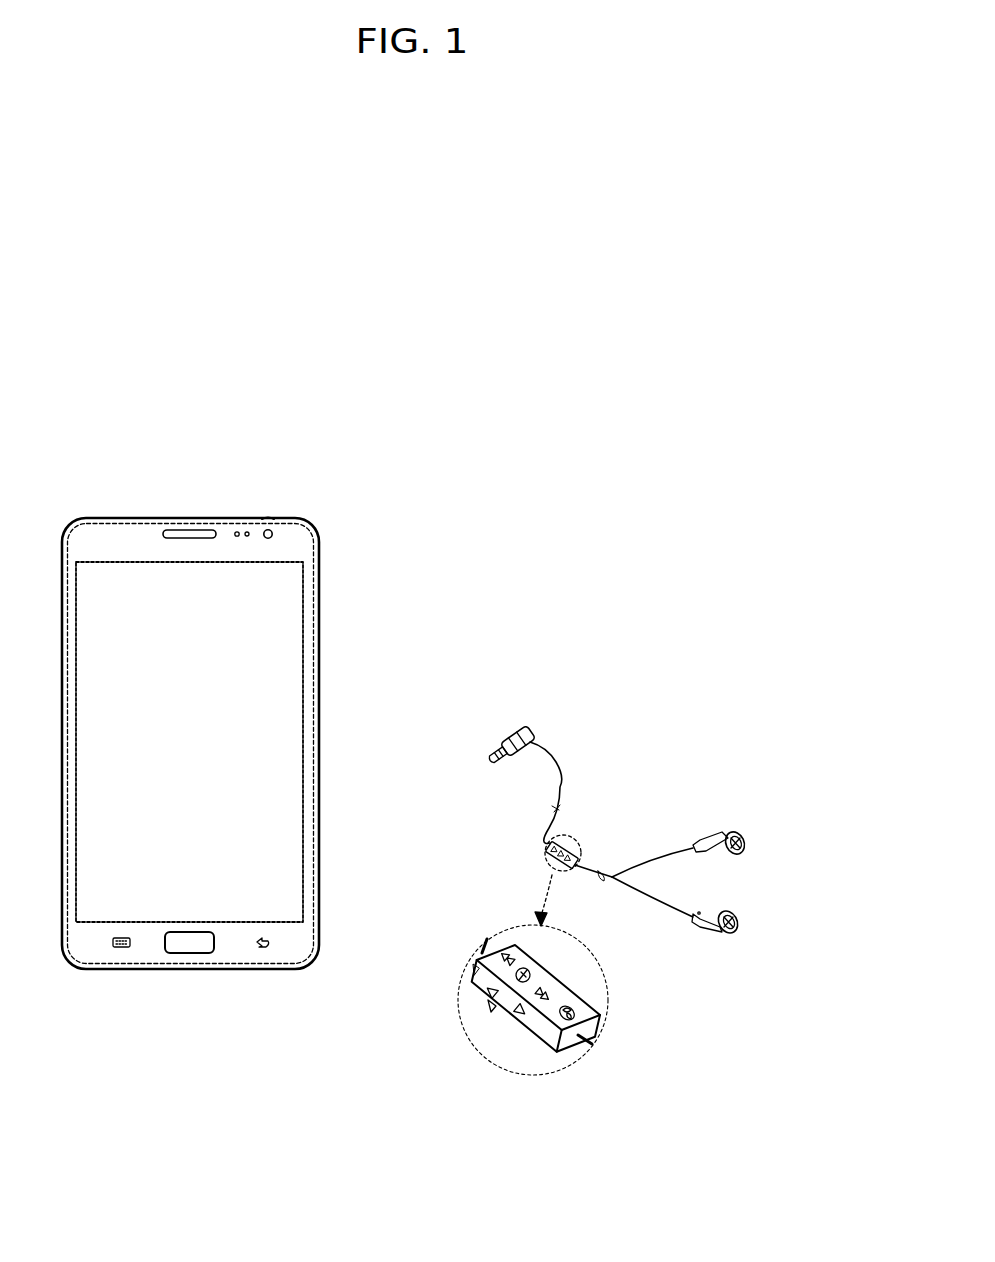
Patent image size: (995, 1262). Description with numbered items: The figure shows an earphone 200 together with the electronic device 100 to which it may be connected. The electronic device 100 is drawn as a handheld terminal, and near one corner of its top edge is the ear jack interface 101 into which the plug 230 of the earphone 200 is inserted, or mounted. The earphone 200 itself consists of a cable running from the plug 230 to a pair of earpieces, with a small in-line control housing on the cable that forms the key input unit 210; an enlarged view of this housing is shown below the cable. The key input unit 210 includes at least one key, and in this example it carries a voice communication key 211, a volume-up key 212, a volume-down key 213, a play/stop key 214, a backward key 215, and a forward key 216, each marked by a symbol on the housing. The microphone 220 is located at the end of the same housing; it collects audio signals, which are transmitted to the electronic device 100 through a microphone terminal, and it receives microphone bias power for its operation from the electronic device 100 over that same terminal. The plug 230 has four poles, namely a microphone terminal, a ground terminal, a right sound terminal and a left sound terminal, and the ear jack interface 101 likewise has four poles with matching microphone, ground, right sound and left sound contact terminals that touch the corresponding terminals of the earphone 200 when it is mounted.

The electronic device 100 is at (117, 518).
The ear jack interface 101 is at (266, 519).
The earphone 200 is at (726, 826).
The key input unit 210 is at (578, 843).
The voice communication key 211 is at (563, 1023).
The volume-up key 212 is at (480, 988).
The volume-down key 213 is at (517, 1018).
The play/stop key 214 is at (493, 1008).
The backward key 215 is at (478, 958).
The forward key 216 is at (544, 1003).
The microphone 220 is at (602, 1016).
The plug 230 is at (495, 741).